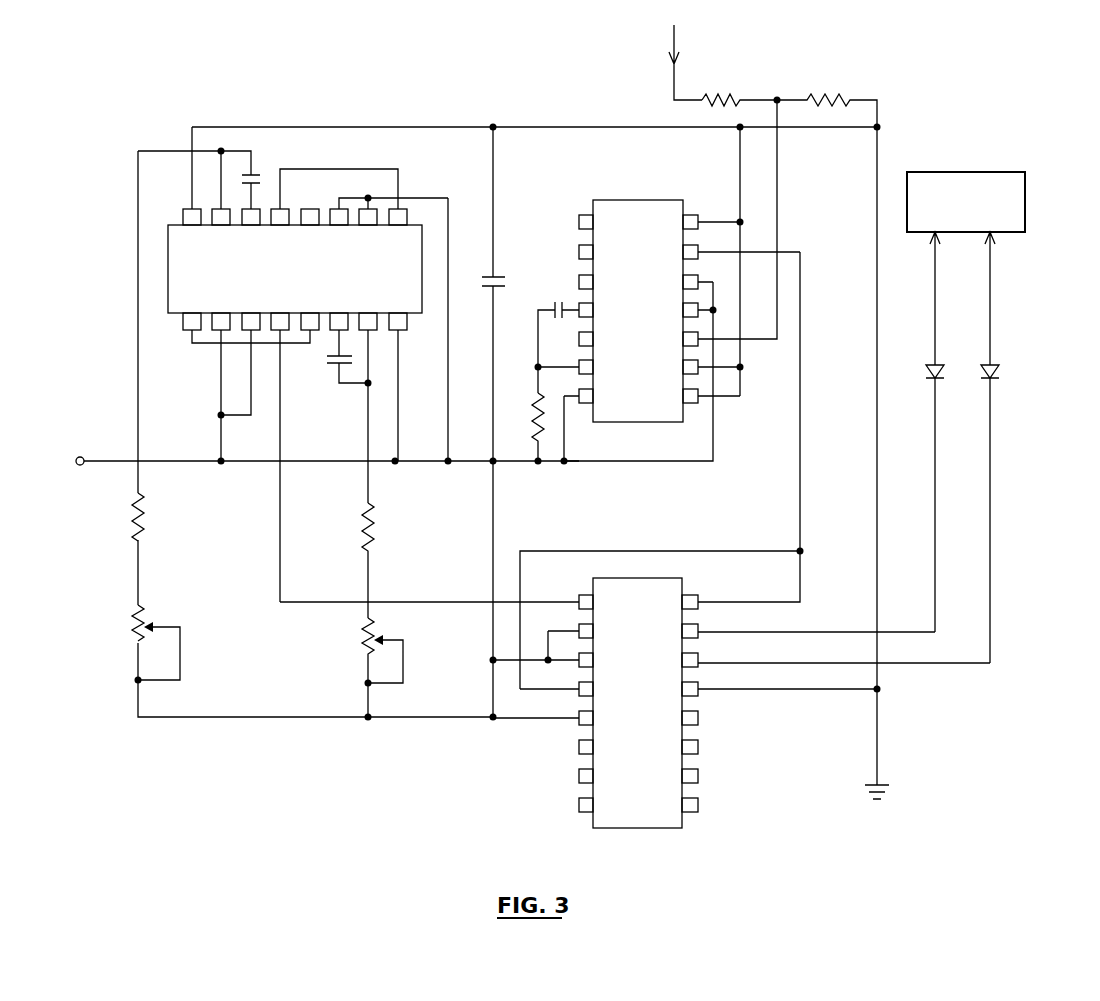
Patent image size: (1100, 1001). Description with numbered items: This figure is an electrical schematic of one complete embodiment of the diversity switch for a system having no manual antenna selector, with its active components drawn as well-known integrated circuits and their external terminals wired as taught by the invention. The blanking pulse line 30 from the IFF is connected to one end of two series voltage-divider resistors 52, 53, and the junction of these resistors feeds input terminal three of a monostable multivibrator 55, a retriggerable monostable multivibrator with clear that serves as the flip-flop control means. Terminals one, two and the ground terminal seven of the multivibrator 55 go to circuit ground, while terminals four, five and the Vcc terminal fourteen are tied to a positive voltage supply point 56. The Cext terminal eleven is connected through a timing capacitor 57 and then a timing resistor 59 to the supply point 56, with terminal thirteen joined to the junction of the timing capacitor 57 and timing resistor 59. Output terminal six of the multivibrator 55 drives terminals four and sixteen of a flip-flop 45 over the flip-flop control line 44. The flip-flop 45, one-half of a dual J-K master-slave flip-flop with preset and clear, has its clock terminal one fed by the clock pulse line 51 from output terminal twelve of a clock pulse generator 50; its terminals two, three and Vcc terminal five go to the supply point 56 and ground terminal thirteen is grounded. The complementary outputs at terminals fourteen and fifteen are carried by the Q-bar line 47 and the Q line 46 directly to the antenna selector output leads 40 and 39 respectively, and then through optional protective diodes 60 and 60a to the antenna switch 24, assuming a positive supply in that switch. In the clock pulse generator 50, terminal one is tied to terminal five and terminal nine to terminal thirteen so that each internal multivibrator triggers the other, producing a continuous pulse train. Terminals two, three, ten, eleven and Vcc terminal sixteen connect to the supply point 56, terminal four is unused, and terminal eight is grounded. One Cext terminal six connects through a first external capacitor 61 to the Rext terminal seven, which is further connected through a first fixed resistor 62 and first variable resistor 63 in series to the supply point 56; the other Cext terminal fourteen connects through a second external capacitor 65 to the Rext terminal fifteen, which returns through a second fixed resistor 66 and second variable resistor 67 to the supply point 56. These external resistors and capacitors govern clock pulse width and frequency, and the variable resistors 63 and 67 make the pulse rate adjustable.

The antenna switch 24 is at (966, 202).
The blanking pulse line 30 is at (674, 80).
The antenna selector output lead 39 is at (935, 486).
The antenna selector output lead 40 is at (992, 544).
The flip-flop control line 44 is at (800, 503).
The flip-flop 45 is at (636, 828).
The Q line 46 is at (820, 632).
The Q-bar line 47 is at (965, 663).
The clock pulse generator 50 is at (168, 232).
The clock pulse line 51 is at (444, 600).
The voltage-divider resistor 52 is at (726, 97).
The voltage-divider resistor 53 is at (830, 97).
The monostable multivibrator 55 is at (644, 200).
The positive voltage supply point 56 is at (79, 468).
The timing capacitor 57 is at (552, 306).
The timing resistor 59 is at (536, 416).
The protective diode 60 is at (996, 372).
The protective diode 60a is at (926, 372).
The first external capacitor 61 is at (256, 177).
The first fixed resistor 62 is at (146, 514).
The first variable resistor 63 is at (134, 627).
The second external capacitor 65 is at (330, 370).
The second fixed resistor 66 is at (363, 517).
The second variable resistor 67 is at (362, 630).